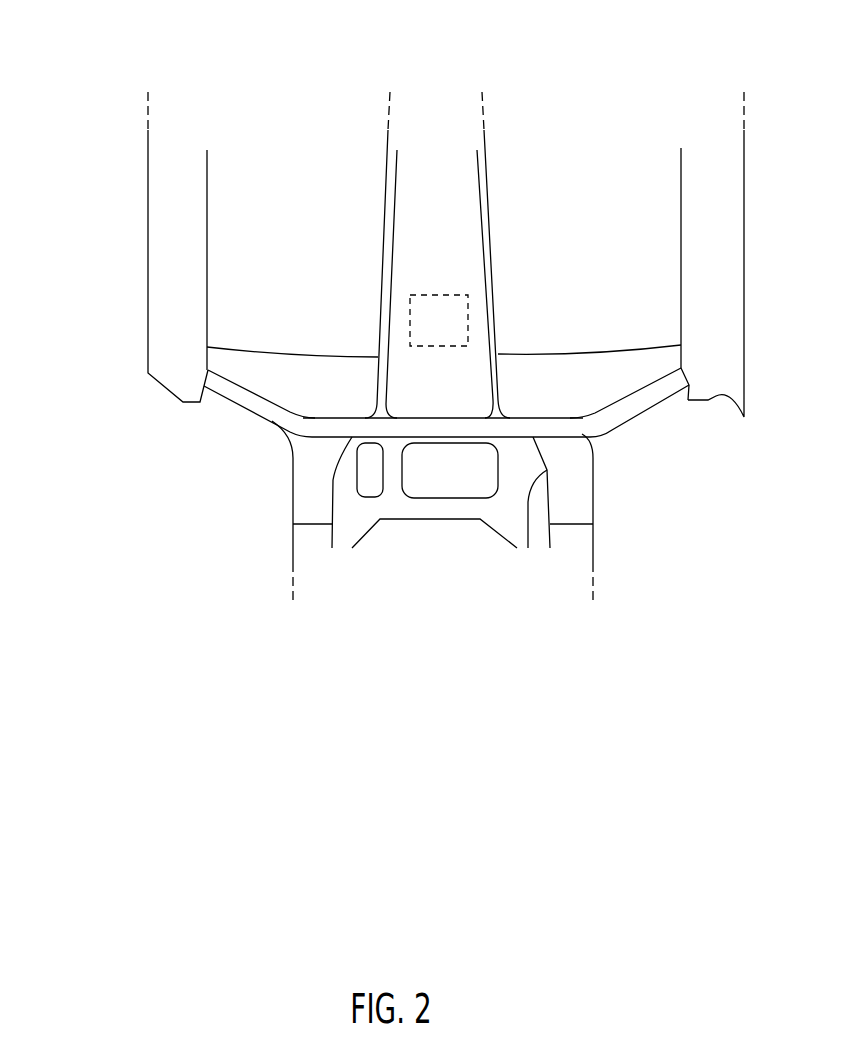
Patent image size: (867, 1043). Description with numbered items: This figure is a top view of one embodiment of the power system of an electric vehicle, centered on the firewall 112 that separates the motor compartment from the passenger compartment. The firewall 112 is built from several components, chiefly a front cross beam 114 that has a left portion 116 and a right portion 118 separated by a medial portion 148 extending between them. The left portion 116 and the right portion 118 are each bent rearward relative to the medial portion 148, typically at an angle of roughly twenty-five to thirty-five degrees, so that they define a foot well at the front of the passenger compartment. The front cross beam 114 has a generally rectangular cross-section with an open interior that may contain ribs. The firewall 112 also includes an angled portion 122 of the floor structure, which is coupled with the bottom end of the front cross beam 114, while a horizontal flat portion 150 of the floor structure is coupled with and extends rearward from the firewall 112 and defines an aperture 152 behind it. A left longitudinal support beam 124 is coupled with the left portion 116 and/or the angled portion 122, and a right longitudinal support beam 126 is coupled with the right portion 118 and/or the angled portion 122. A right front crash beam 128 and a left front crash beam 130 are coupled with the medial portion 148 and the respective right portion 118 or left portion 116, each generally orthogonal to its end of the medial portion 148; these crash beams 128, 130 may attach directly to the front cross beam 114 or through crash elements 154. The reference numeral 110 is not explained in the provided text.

The horizontal flat portion 150 is at (283, 143).
The right longitudinal support beam 126 is at (155, 238).
The left longitudinal support beam 124 is at (727, 167).
The airfoil 110 is at (457, 207).
The aperture 152 is at (410, 297).
The angled portion 122 is at (305, 385).
The front cross beam 114 is at (530, 410).
The firewall 112 is at (196, 363).
The right portion 118 is at (240, 397).
The left portion 116 is at (645, 403).
The crash elements 154 is at (303, 493).
The right front crash beam 128 is at (323, 552).
The left front crash beam 130 is at (564, 540).
The medial portion 148 is at (427, 430).